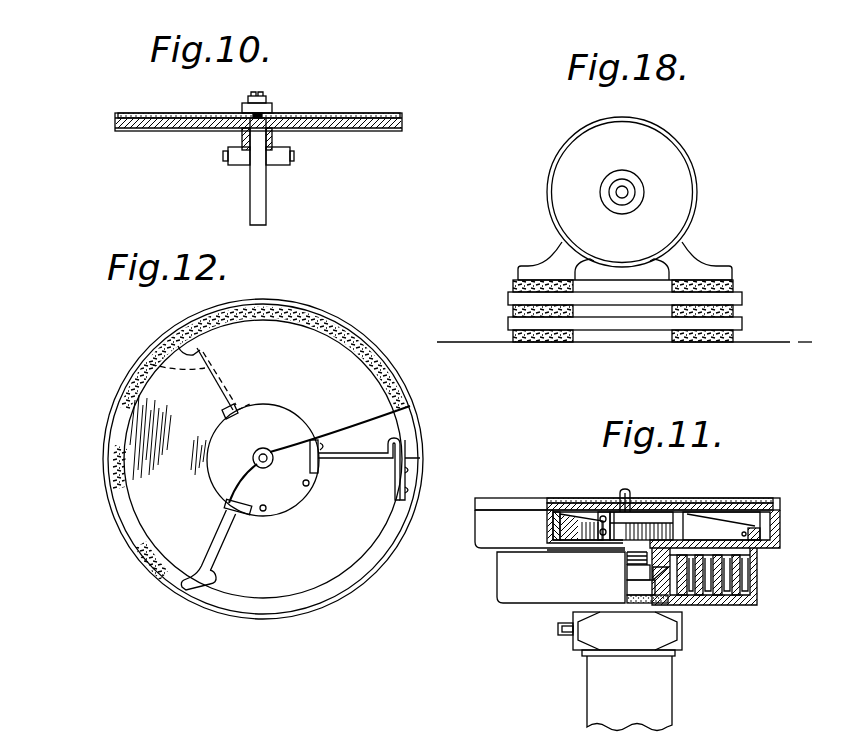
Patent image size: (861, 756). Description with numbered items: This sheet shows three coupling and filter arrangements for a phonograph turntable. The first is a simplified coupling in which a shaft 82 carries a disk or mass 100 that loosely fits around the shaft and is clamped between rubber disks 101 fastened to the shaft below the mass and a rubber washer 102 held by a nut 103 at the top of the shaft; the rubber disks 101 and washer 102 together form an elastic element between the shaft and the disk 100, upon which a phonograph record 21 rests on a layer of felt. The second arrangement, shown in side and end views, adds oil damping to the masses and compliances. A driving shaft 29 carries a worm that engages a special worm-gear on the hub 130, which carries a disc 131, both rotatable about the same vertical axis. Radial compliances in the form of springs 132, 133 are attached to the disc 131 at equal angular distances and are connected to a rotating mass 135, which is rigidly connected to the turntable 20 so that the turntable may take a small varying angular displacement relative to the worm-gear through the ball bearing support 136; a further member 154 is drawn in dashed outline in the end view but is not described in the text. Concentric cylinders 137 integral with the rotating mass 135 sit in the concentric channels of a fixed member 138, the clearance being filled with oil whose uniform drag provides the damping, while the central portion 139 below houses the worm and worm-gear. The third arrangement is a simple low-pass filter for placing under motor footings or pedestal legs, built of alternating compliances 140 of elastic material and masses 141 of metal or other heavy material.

In FIG. 10, the disk 100 is at (402, 126).
In FIG. 10, the phonograph record 21 is at (360, 113).
In FIG. 10, the nut 103 is at (266, 98).
In FIG. 10, the rubber washer 102 is at (272, 111).
In FIG. 10, the shaft 82 is at (262, 203).
In FIG. 10, the rubber disks 101 is at (242, 158).
In FIG. 18, the compliances 140 is at (736, 338).
In FIG. 18, the masses 141 is at (508, 323).
In FIG. 12, the rotating mass 135 is at (418, 420).
In FIG. 11, the rotating mass 135 is at (780, 528).
In FIG. 12, the disc 131 is at (296, 497).
In FIG. 11, the disc 131 is at (653, 523).
In FIG. 12, the turntable 20 is at (412, 404).
In FIG. 11, the turntable 20 is at (774, 503).
In FIG. 12, the spring 133 is at (217, 540).
In FIG. 11, the spring 133 is at (603, 515).
In FIG. 12, the spring 132 is at (347, 458).
In FIG. 11, the spring 132 is at (707, 530).
In FIG. 12, the stop member 154 is at (150, 364).
In FIG. 11, the fixed member 138 is at (757, 603).
In FIG. 11, the concentric cylinders 137 is at (758, 583).
In FIG. 11, the hub 130 is at (625, 563).
In FIG. 11, the ball bearing support 136 is at (662, 578).
In FIG. 11, the central portion 139 is at (663, 632).
In FIG. 11, the shaft 29 is at (562, 630).